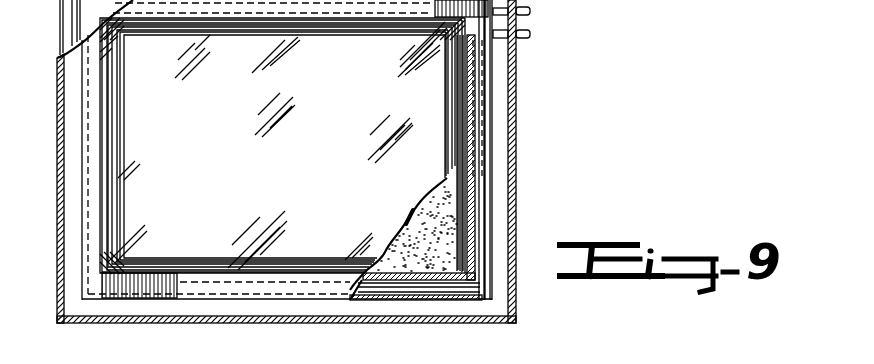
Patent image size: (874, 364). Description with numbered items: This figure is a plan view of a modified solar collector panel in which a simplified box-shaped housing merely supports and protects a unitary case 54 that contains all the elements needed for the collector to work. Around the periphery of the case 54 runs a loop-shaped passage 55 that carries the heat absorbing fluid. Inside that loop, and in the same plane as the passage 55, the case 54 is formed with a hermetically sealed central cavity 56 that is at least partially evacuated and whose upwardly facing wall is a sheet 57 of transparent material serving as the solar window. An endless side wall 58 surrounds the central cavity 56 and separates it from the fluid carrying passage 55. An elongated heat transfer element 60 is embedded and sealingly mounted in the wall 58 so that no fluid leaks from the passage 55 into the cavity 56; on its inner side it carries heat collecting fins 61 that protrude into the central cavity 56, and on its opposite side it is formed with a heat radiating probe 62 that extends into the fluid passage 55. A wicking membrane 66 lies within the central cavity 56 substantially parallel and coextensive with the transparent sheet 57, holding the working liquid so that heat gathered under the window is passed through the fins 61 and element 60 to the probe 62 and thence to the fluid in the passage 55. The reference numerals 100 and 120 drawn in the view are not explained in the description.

The unitary case 54 is at (505, 100).
The peripherally disposed passage 55 is at (80, 152).
The central cavity 56 is at (465, 226).
The sheet of transparent material 57 is at (387, 242).
The endless side wall 58 is at (445, 283).
The heat transfer element 60 is at (490, 239).
The heat collecting fins 61 is at (457, 133).
The heat radiating probe 62 is at (475, 252).
The wicking membrane 66 is at (427, 207).
The housing case 100 is at (316, 161).
The case wall 120 is at (515, 189).